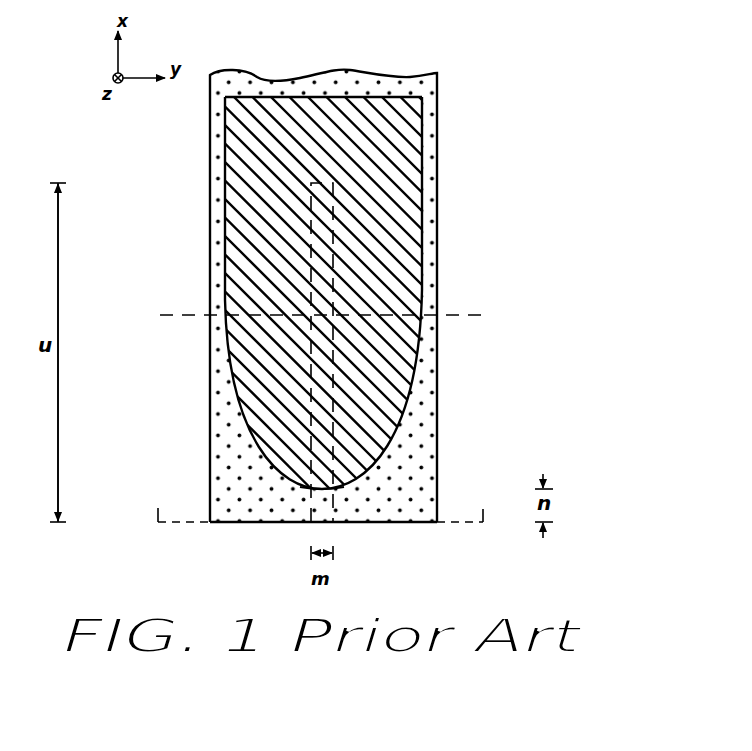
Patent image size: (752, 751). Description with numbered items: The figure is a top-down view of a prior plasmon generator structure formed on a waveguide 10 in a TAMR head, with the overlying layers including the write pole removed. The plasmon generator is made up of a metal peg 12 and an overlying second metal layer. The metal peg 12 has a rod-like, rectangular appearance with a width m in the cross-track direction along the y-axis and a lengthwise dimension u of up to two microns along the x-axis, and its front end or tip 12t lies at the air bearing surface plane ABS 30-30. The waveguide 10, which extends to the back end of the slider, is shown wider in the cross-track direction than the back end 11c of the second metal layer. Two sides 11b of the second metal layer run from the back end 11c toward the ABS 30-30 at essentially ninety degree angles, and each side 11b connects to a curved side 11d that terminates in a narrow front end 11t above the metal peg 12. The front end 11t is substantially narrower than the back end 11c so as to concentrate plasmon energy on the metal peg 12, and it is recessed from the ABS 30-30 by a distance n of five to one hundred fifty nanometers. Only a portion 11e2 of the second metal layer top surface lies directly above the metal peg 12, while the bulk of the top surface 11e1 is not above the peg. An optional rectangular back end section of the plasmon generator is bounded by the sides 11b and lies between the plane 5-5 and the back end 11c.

The plane 5 is at (319, 316).
The waveguide 10 is at (217, 405).
The sides of the second metal layer 11b is at (207, 242).
The back end of second metal layer 11c is at (280, 97).
The curved side 11d is at (247, 423).
The top surface of second metal layer 11e1 is at (318, 122).
The portion of second metal layer top surface 11e2 is at (330, 315).
The front end 11t is at (310, 491).
The metal peg 12 is at (323, 512).
The front end (tip) of metal peg 12t is at (320, 522).
The ABS 30 is at (322, 500).